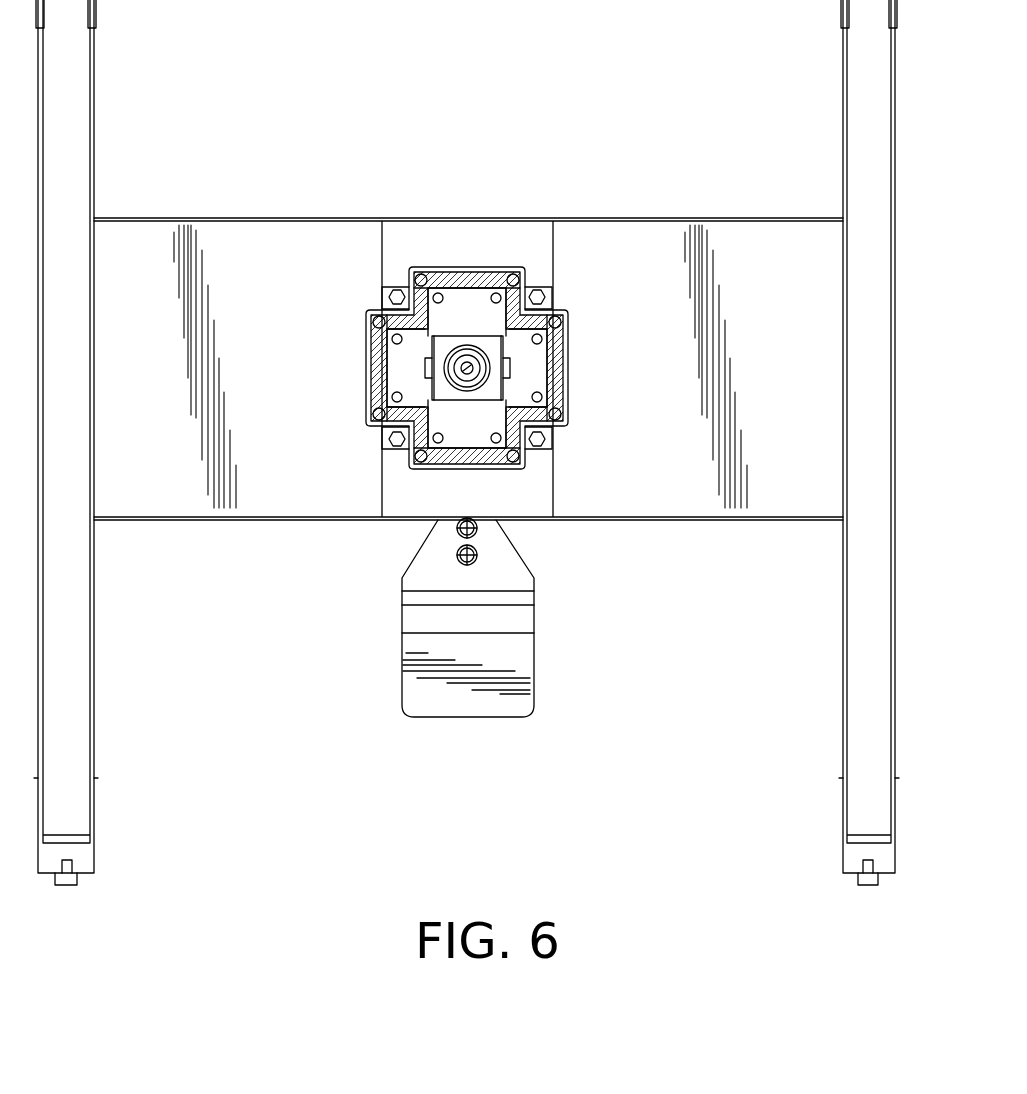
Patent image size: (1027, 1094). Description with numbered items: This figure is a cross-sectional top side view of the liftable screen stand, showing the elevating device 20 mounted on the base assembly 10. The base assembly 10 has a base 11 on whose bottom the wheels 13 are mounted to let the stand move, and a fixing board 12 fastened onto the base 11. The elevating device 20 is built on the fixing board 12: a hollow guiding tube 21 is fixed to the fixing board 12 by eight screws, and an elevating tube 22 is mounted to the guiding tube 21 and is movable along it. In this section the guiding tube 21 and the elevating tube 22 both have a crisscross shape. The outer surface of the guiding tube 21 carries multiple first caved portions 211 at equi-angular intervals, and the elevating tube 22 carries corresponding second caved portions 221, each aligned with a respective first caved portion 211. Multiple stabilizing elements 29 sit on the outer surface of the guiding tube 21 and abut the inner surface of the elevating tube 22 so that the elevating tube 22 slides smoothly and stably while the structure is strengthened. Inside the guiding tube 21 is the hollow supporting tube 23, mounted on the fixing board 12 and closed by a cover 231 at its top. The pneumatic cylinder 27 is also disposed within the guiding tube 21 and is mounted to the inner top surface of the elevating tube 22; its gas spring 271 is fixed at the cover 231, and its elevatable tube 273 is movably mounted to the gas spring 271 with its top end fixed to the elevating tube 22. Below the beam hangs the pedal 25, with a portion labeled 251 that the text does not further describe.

The base assembly 10 is at (248, 198).
The base 11 is at (643, 250).
The fixing board 12 is at (426, 357).
The wheel 13 is at (885, 860).
The elevating device 20 is at (474, 369).
The guiding tube 21 is at (514, 368).
The first caved portion 211 is at (515, 375).
The elevating tube 22 is at (467, 318).
The second caved portion 221 is at (426, 338).
The supporting tube 23 is at (407, 357).
The cover 231 is at (527, 359).
The pedal 25 is at (466, 658).
The hanging block surface 251 is at (488, 693).
The pneumatic cylinder 27 is at (526, 428).
The gas spring 271 is at (392, 374).
The elevatable tube 273 is at (379, 407).
The stabilizing element 29 is at (513, 315).